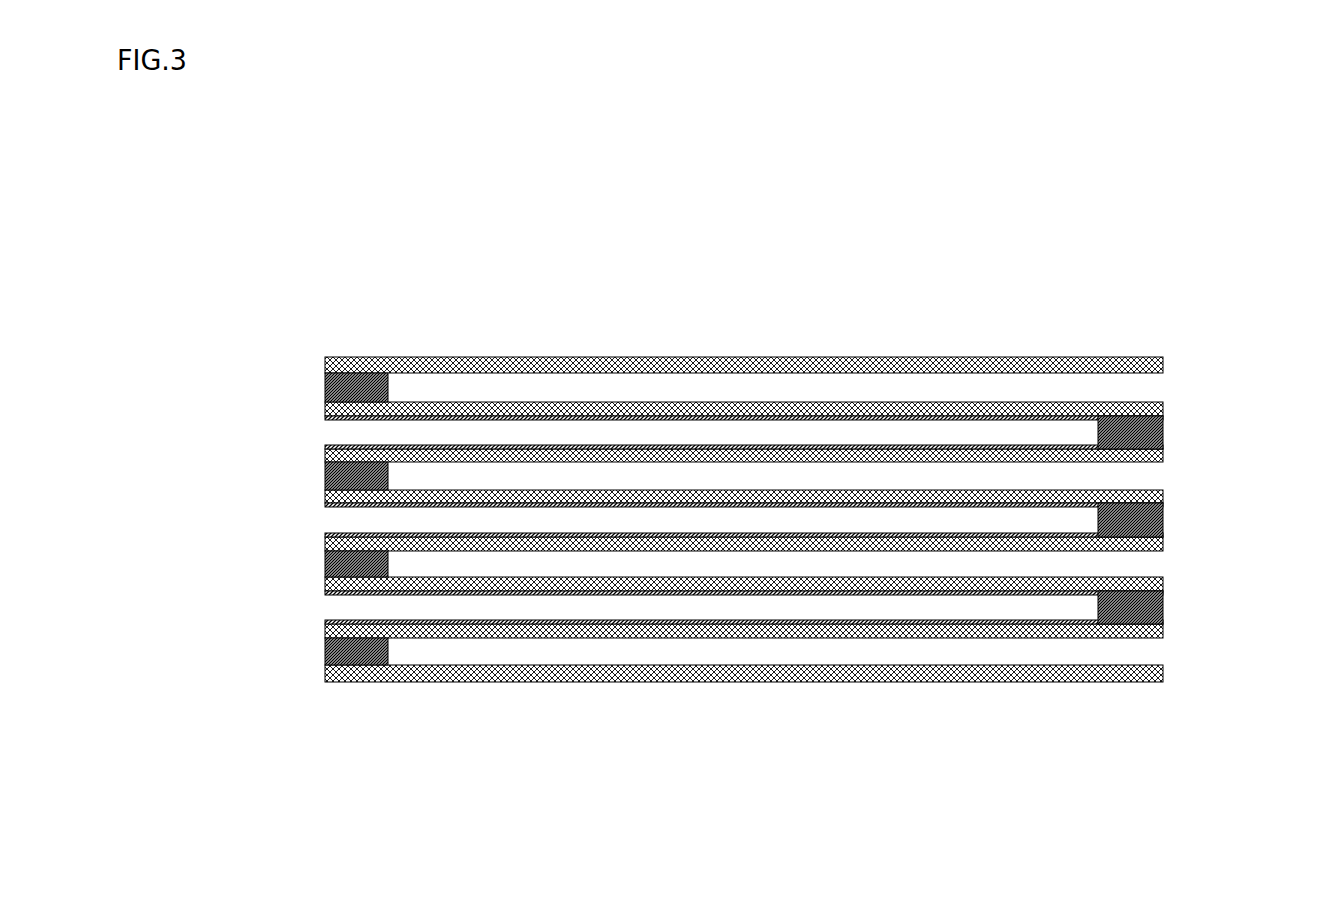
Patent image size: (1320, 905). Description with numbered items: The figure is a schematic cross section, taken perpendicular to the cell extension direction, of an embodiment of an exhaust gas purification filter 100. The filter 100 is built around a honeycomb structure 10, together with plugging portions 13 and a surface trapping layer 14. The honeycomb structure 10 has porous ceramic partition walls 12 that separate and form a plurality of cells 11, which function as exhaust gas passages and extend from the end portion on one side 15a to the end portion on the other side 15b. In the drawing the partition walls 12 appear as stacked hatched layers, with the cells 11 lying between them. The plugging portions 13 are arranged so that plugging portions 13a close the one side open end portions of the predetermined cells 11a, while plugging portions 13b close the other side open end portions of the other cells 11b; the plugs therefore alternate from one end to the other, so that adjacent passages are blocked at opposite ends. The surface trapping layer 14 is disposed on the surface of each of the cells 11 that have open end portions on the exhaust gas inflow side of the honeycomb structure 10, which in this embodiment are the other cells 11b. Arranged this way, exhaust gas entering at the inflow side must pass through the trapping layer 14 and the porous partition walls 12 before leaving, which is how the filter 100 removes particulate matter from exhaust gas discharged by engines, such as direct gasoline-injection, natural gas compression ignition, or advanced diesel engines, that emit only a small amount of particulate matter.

The exhaust gas purification filter 100 is at (1243, 180).
The honeycomb structure 10 is at (888, 681).
The cell 11 is at (703, 498).
The predetermined cell 11a is at (557, 385).
The other cell 11b is at (333, 607).
The partition wall 12 is at (492, 403).
The plugging portion 13 is at (756, 475).
The plugging portion 13a is at (322, 474).
The plugging portion 13b is at (1165, 425).
The surface trapping layer 14 is at (515, 637).
The end portion on one side 15a is at (296, 512).
The end portion on the other side 15b is at (1198, 480).